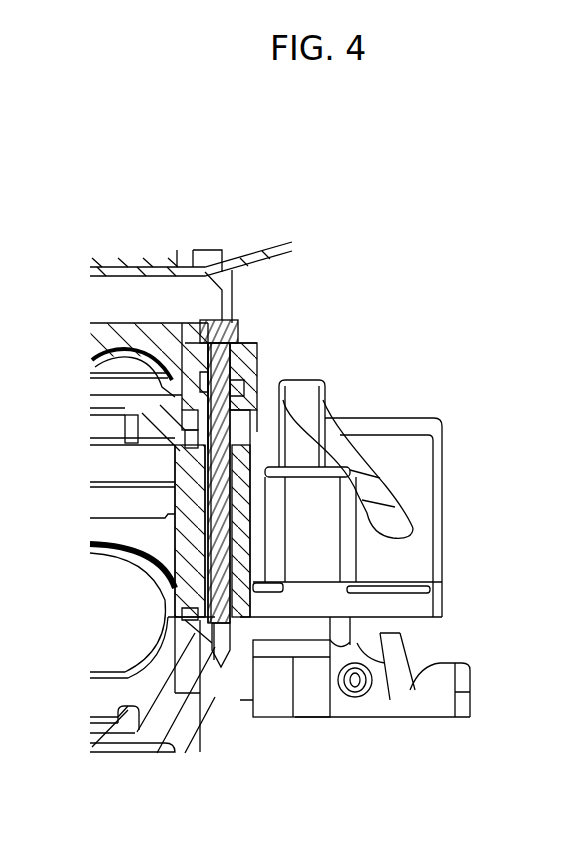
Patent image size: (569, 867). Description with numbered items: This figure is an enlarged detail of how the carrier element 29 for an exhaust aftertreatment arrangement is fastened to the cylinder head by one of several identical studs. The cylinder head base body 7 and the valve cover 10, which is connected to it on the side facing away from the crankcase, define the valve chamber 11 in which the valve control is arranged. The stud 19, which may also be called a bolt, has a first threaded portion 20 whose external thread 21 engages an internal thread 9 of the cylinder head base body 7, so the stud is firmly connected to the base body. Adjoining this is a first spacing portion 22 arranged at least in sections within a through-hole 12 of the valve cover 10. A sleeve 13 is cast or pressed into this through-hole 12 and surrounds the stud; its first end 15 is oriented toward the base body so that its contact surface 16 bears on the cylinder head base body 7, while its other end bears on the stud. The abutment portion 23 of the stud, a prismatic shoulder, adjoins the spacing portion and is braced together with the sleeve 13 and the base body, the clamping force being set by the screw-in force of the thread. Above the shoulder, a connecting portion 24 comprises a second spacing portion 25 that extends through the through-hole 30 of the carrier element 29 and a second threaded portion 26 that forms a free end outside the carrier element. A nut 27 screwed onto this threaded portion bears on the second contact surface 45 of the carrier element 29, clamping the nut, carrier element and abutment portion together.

The cylinder head base body 7 is at (150, 728).
The internal thread 9 is at (232, 605).
The valve cover 10 is at (185, 472).
The valve chamber 11 is at (108, 568).
The through-hole 12 is at (200, 518).
The sleeve 13 is at (234, 457).
The first end 15 is at (238, 592).
The contact surface 16 is at (234, 590).
The stud 19 is at (346, 432).
The first threaded portion 20 is at (218, 631).
The external thread 21 is at (210, 645).
The first spacing portion 22 is at (232, 574).
The abutment portion 23 is at (215, 420).
The connecting portion 24 is at (240, 389).
The second spacing portion 25 is at (207, 374).
The second threaded portion 26 is at (243, 340).
The nut 27 is at (210, 322).
The carrier element 29 is at (178, 253).
The through-hole 30 is at (222, 377).
The second contact surface 45 is at (245, 342).